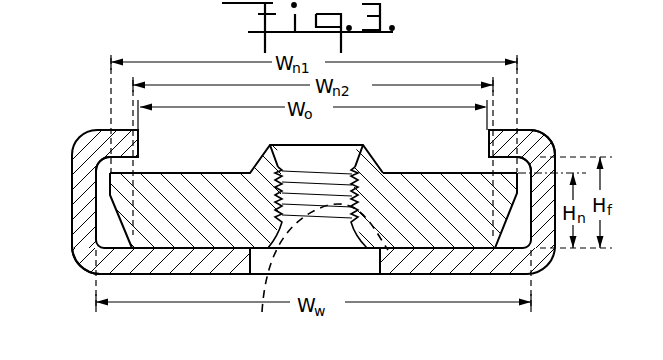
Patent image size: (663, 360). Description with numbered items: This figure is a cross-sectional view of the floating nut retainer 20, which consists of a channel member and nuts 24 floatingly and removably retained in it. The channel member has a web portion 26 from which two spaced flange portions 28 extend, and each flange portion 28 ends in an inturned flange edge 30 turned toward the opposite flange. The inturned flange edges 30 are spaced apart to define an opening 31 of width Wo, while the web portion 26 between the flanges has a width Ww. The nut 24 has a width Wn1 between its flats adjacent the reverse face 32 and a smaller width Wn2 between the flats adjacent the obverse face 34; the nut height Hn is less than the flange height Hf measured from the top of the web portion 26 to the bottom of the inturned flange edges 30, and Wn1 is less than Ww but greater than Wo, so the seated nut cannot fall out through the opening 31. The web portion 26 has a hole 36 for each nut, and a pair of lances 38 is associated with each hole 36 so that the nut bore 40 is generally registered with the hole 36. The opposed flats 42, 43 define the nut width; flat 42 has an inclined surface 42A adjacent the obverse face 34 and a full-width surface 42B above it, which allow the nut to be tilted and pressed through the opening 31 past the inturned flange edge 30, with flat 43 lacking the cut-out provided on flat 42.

The floating nut retainer 20 is at (539, 113).
The nut 24 is at (167, 201).
The web portion 26 is at (495, 267).
The flange portion 28 is at (85, 190).
The inturned flange edge 30 is at (122, 128).
The opening 31 is at (406, 141).
The reverse face 32 is at (407, 173).
The obverse face 34 is at (423, 255).
The hole 36 is at (267, 263).
The lance 38 is at (320, 274).
The nut bore 40 is at (293, 152).
The flat 42 is at (101, 210).
The surface of inclined portion 42A is at (72, 246).
The surface of full width portion 42B is at (96, 178).
The flat 43 is at (532, 168).